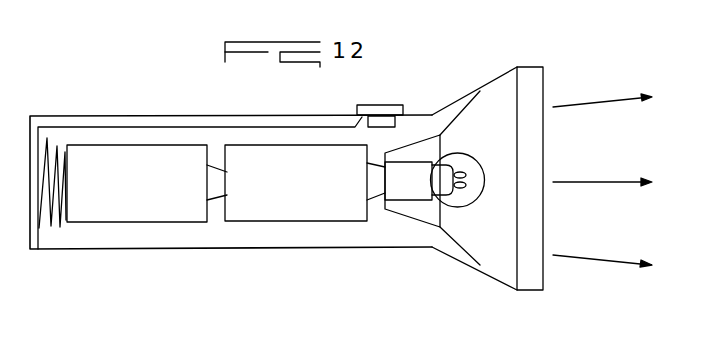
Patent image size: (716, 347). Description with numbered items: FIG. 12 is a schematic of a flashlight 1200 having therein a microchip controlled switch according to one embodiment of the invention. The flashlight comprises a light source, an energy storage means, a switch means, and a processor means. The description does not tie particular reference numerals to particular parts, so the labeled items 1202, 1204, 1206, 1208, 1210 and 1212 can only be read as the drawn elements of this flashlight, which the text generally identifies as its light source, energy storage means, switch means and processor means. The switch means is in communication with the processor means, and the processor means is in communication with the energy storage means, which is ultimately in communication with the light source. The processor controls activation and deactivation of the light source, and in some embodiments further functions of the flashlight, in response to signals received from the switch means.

The flashlight 1200 is at (263, 259).
The spring 1202 is at (80, 250).
The batteries 1204 is at (253, 155).
The light bulb 1206 is at (477, 205).
The lens 1208 is at (537, 65).
The switch 1210 is at (385, 98).
The switch contact 1212 is at (354, 113).